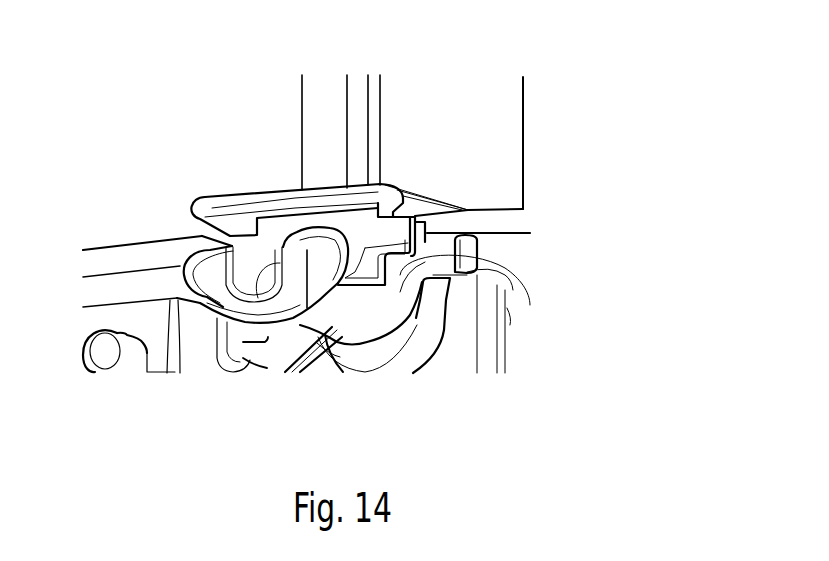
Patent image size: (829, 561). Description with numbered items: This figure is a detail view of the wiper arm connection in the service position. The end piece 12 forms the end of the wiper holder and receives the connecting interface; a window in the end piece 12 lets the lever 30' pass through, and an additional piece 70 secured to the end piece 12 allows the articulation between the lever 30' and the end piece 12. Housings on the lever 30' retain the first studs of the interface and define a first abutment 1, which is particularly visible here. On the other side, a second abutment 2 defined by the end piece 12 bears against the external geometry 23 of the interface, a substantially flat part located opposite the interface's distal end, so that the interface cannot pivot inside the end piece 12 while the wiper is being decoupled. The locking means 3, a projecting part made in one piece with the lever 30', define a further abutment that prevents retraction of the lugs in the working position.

The first abutment 1 is at (246, 275).
The second abutment 2 is at (480, 238).
The locking means 3 is at (198, 273).
The end piece 12 is at (127, 239).
The external geometry 23 is at (446, 247).
The lever 30' is at (483, 158).
The additional piece 70 is at (273, 186).